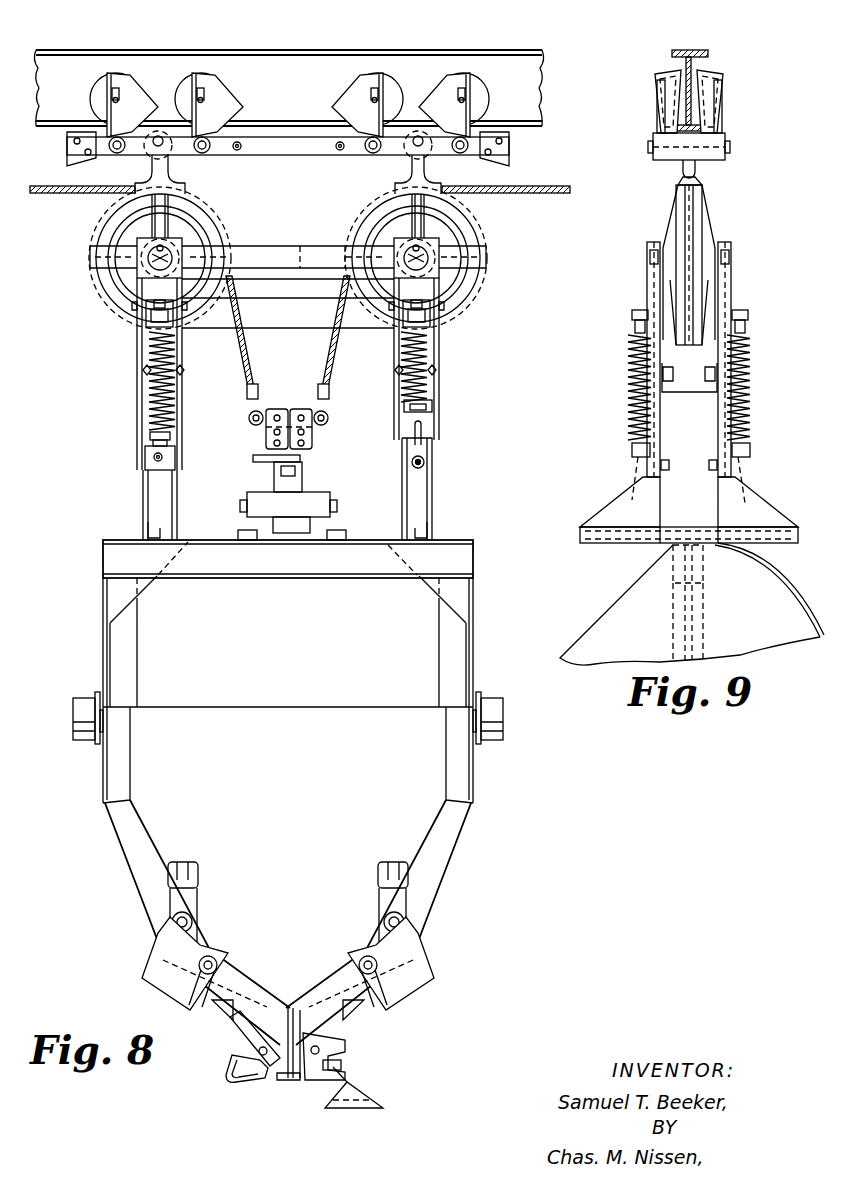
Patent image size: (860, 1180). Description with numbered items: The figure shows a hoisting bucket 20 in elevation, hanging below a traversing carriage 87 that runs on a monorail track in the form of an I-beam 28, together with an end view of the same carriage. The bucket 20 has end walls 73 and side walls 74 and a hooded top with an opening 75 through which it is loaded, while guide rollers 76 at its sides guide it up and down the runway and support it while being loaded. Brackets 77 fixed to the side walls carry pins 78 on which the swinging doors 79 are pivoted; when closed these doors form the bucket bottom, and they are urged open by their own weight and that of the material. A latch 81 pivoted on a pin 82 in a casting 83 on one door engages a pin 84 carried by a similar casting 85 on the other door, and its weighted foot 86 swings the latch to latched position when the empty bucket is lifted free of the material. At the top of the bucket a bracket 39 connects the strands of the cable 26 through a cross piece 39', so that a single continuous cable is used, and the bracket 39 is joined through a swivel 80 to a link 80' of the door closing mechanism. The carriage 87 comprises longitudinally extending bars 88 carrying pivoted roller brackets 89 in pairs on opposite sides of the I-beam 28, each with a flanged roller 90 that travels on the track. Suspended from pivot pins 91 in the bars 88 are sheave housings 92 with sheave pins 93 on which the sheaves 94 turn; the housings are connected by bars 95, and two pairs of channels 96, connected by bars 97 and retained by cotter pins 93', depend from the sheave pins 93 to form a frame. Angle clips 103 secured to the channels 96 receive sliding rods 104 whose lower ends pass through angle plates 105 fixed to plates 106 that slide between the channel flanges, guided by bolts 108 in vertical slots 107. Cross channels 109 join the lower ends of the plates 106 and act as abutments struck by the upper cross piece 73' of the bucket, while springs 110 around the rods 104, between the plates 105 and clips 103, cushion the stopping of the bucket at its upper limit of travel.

In FIG. 8, the bucket 20 is at (498, 783).
In FIG. 8, the cable 26 is at (52, 185).
In FIG. 8, the I-beam track 28 is at (523, 82).
In FIG. 9, the I-beam track 28 is at (693, 63).
In FIG. 8, the bracket 39 is at (290, 410).
In FIG. 8, the cross piece 39' is at (268, 437).
In FIG. 8, the end walls 73 is at (292, 689).
In FIG. 9, the end walls 73 is at (692, 604).
In FIG. 8, the upper cross piece 73' is at (288, 589).
In FIG. 8, the side walls 74 is at (415, 820).
In FIG. 8, the opening 75 is at (410, 618).
In FIG. 8, the guide rollers 76 is at (82, 705).
In FIG. 8, the brackets 77 is at (175, 987).
In FIG. 8, the pins 78 is at (172, 922).
In FIG. 8, the swinging doors 79 is at (237, 1008).
In FIG. 8, the swivel 80 is at (315, 469).
In FIG. 8, the link 80' is at (310, 508).
In FIG. 8, the latch 81 is at (245, 1070).
In FIG. 8, the pin 82 is at (341, 1062).
In FIG. 8, the casting 83 is at (345, 1040).
In FIG. 8, the pin 84 is at (282, 1078).
In FIG. 8, the casting 85 is at (247, 1040).
In FIG. 8, the foot 86 is at (360, 1097).
In FIG. 8, the carriage 87 is at (490, 200).
In FIG. 9, the carriage 87 is at (723, 181).
In FIG. 8, the longitudinally extending bars 88 is at (282, 152).
In FIG. 8, the roller brackets 89 is at (228, 100).
In FIG. 9, the roller brackets 89 is at (658, 130).
In FIG. 8, the flanged roller 90 is at (97, 100).
In FIG. 9, the flanged roller 90 is at (668, 85).
In FIG. 8, the pivot pins 91 is at (154, 151).
In FIG. 9, the pivot pins 91 is at (690, 172).
In FIG. 8, the sheave housings 92 is at (202, 208).
In FIG. 9, the sheave housings 92 is at (676, 203).
In FIG. 8, the sheave pins 93 is at (290, 236).
In FIG. 9, the sheave pins 93 is at (722, 246).
In FIG. 8, the cotter pins 93' is at (290, 278).
In FIG. 8, the sheaves 94 is at (482, 250).
In FIG. 8, the bars 95 is at (315, 255).
In FIG. 9, the bars 95 is at (668, 247).
In FIG. 8, the channels 96 is at (137, 350).
In FIG. 9, the channels 96 is at (647, 280).
In FIG. 8, the bars 97 is at (263, 323).
In FIG. 9, the bars 97 is at (710, 320).
In FIG. 8, the angle clips 103 is at (178, 330).
In FIG. 9, the angle clips 103 is at (634, 330).
In FIG. 8, the rods 104 is at (157, 452).
In FIG. 9, the rods 104 is at (690, 491).
In FIG. 8, the angle plates 105 is at (160, 440).
In FIG. 9, the angle plates 105 is at (632, 447).
In FIG. 8, the plates 106 is at (148, 505).
In FIG. 9, the plates 106 is at (613, 485).
In FIG. 8, the vertical slots 107 is at (422, 430).
In FIG. 8, the bolts 108 is at (424, 462).
In FIG. 9, the bolts 108 is at (712, 466).
In FIG. 8, the cross channels 109 is at (160, 537).
In FIG. 9, the cross channels 109 is at (675, 535).
In FIG. 8, the springs 110 is at (174, 412).
In FIG. 9, the springs 110 is at (628, 377).